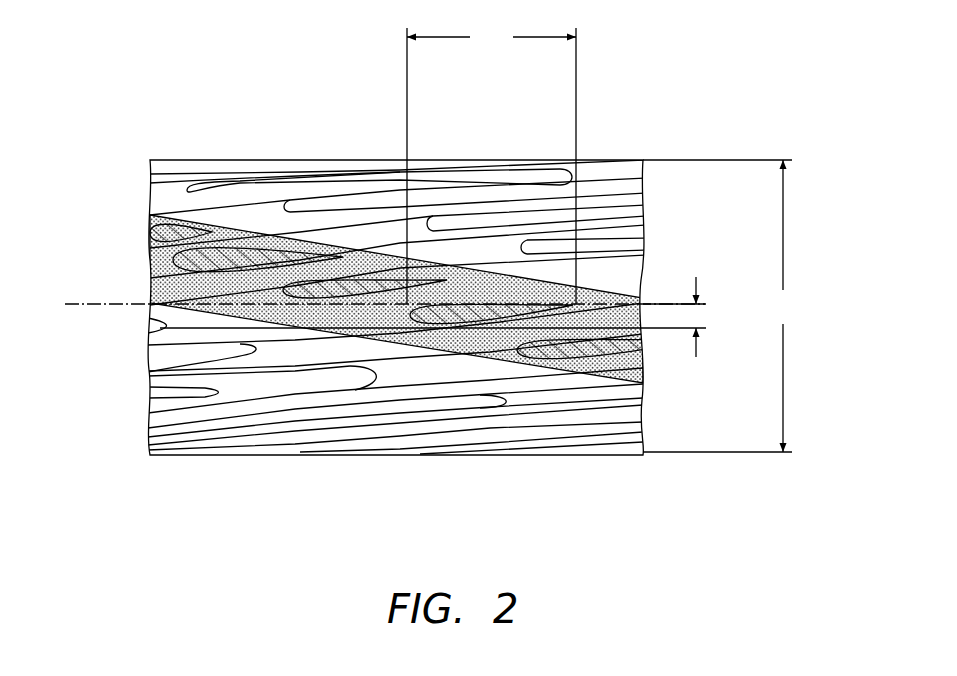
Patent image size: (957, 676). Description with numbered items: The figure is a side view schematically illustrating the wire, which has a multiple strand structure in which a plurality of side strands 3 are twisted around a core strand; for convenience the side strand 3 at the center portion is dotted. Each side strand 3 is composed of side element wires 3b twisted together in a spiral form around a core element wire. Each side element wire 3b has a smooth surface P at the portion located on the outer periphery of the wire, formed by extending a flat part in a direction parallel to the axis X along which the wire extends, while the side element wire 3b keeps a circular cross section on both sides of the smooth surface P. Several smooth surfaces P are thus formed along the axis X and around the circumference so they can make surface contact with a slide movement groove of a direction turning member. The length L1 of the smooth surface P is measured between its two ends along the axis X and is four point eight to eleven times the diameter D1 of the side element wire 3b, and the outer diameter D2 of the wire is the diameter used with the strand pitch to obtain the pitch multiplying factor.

The side strand 3 is at (258, 318).
The side element wire of side strand 3b is at (324, 330).
The smooth surface P is at (473, 160).
The axis X is at (103, 303).
The length of smooth surface L1 is at (491, 164).
The diameter of side element wire of side strand D1 is at (697, 312).
The diameter of wire D2 is at (722, 306).